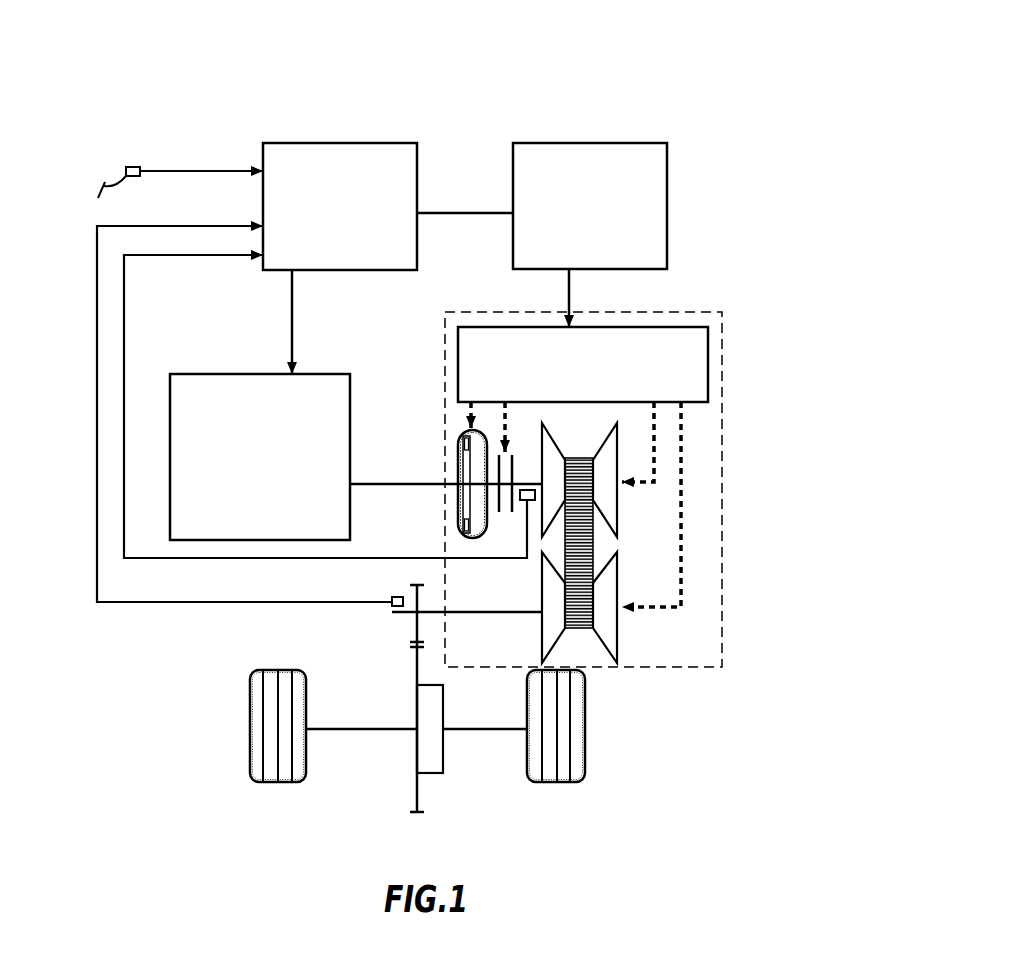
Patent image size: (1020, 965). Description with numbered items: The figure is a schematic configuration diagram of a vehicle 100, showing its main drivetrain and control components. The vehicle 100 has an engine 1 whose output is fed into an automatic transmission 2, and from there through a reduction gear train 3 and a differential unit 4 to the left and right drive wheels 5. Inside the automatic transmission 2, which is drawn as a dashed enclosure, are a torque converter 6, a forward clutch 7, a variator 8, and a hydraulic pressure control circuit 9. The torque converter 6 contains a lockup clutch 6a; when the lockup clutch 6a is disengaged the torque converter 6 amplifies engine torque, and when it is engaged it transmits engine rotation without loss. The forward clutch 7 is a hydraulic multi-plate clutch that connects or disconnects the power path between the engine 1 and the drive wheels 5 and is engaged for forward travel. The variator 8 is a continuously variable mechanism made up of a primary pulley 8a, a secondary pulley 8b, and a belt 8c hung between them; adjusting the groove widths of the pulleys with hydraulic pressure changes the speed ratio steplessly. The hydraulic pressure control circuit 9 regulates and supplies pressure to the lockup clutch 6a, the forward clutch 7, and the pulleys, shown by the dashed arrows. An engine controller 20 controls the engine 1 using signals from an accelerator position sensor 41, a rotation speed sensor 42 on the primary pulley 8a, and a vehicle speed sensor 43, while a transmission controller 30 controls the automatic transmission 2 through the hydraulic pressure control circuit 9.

The vehicle 100 is at (704, 108).
The engine controller 20 is at (346, 143).
The transmission controller 30 is at (582, 143).
The engine 1 is at (206, 374).
The automatic transmission 2 is at (723, 580).
The hydraulic pressure control circuit 9 is at (708, 368).
The torque converter 6 is at (457, 473).
The lockup clutch 6a is at (458, 530).
The forward clutch 7 is at (513, 470).
The rotation speed sensor 42 is at (527, 500).
The variator 8 is at (608, 543).
The primary pulley 8a is at (617, 510).
The secondary pulley 8b is at (617, 563).
The belt 8c is at (593, 543).
The accelerator position sensor 41 is at (140, 168).
The vehicle speed sensor 43 is at (390, 598).
The reduction gear train 3 is at (402, 648).
The differential unit 4 is at (443, 773).
The drive wheels 5 is at (284, 783).